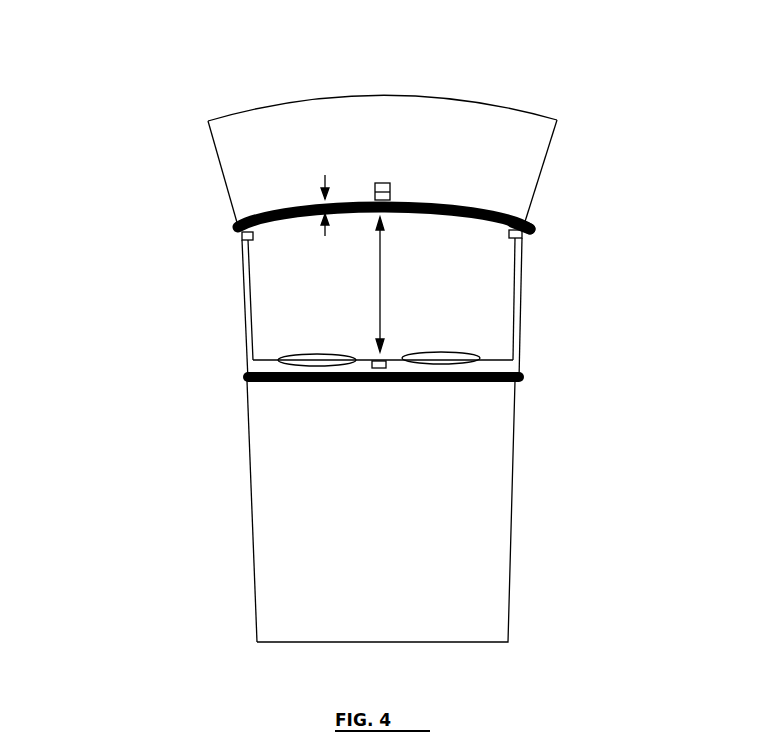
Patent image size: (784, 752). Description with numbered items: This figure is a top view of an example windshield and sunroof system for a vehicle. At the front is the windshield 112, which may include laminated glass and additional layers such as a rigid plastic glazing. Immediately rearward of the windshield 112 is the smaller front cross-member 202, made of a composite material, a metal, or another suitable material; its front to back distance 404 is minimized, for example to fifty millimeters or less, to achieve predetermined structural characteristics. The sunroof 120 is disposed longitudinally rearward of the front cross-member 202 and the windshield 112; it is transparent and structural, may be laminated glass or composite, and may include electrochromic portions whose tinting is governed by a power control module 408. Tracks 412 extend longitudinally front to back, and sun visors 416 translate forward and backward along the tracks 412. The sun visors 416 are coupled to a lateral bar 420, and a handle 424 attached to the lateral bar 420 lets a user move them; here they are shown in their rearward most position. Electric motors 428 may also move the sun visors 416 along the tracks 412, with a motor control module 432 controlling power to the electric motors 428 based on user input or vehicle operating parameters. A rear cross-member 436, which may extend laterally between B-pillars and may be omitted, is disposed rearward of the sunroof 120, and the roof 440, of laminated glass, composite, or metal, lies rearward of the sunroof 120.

The windshield 112 is at (298, 132).
The front to back distance 404 is at (325, 193).
The front cross-member 202 is at (532, 232).
The power control module 408 is at (383, 183).
The motor control module 432 is at (391, 198).
The electric motors 428 is at (240, 236).
The tracks 412 is at (245, 294).
The sunroof 120 is at (463, 315).
The sun visors 416 is at (292, 355).
The handle 424 is at (417, 382).
The rear cross-member 436 is at (517, 383).
The lateral bar 420 is at (246, 381).
The roof 440 is at (403, 513).